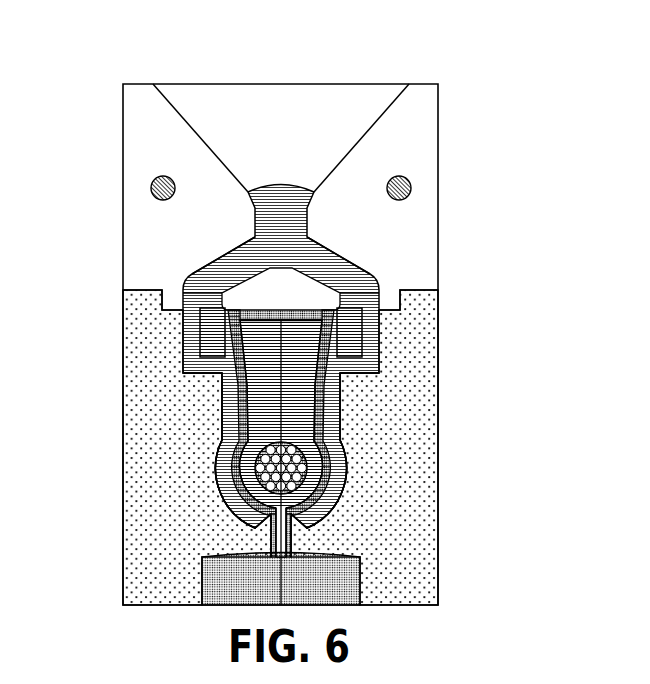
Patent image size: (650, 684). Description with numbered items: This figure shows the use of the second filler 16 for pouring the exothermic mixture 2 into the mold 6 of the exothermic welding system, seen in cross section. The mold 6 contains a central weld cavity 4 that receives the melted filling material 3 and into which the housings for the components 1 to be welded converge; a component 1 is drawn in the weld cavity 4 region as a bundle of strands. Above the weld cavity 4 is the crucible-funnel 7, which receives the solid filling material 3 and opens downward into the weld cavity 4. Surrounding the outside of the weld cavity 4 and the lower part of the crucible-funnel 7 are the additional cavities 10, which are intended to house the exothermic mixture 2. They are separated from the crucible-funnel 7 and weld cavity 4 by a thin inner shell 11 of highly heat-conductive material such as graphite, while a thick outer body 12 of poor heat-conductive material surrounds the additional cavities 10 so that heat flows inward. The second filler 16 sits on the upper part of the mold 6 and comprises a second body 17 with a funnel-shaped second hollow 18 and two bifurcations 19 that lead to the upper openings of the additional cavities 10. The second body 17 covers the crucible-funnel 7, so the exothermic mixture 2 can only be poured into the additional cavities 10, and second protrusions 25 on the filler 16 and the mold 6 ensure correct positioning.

The component 1 is at (302, 466).
The exothermic mixture 2 is at (275, 205).
The solid filling material 3 is at (180, 347).
The weld cavity 4 is at (333, 500).
The mold 6 is at (452, 370).
The crucible-funnel 7 is at (223, 382).
The additional cavity 10 is at (338, 412).
The inner shell 11 is at (220, 472).
The outer body 12 is at (158, 568).
The second filler 16 is at (454, 104).
The second body 17 is at (418, 158).
The second hollow 18 is at (348, 102).
The bifurcation 19 is at (235, 283).
The second protrusion 25 is at (143, 302).